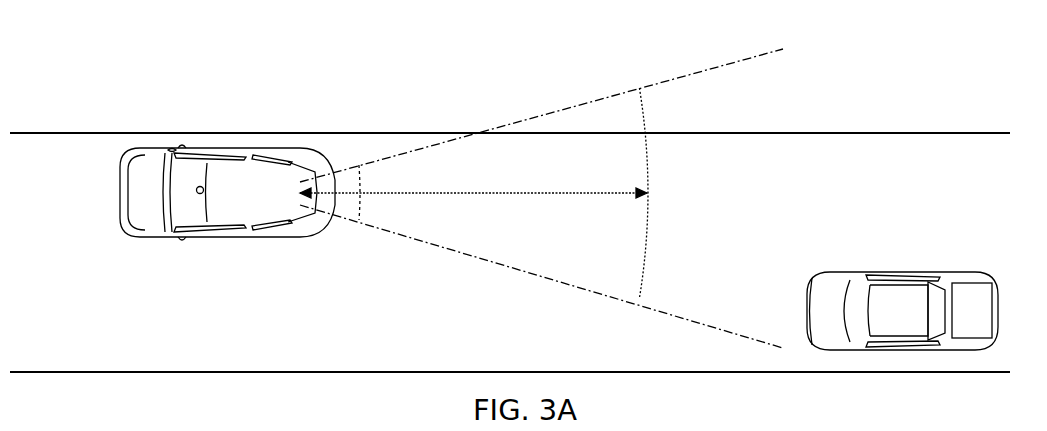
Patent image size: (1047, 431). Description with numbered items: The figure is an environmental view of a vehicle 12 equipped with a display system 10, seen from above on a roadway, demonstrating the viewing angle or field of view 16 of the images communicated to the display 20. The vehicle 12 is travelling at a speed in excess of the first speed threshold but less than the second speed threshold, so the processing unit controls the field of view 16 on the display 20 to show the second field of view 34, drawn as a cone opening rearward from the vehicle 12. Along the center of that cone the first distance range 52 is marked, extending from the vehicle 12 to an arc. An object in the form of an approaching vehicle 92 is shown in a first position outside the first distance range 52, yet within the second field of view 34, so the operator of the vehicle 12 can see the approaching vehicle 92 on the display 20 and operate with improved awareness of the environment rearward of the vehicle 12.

The display system 10 is at (300, 147).
The vehicle 12 is at (172, 151).
The field of view 16 is at (748, 118).
The display 20 is at (199, 193).
The second field of view 34 is at (663, 83).
The first distance range 52 is at (508, 193).
The approaching vehicle 92 is at (878, 290).